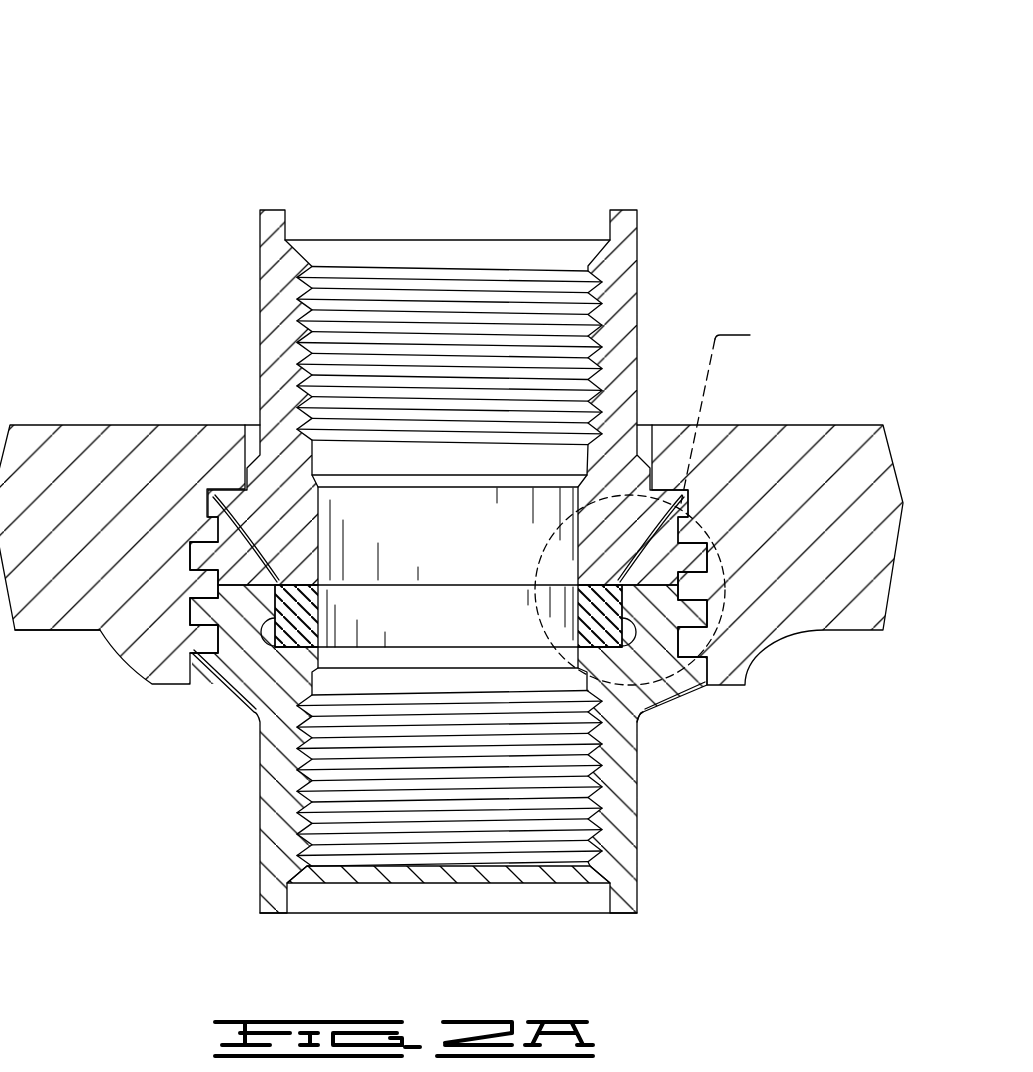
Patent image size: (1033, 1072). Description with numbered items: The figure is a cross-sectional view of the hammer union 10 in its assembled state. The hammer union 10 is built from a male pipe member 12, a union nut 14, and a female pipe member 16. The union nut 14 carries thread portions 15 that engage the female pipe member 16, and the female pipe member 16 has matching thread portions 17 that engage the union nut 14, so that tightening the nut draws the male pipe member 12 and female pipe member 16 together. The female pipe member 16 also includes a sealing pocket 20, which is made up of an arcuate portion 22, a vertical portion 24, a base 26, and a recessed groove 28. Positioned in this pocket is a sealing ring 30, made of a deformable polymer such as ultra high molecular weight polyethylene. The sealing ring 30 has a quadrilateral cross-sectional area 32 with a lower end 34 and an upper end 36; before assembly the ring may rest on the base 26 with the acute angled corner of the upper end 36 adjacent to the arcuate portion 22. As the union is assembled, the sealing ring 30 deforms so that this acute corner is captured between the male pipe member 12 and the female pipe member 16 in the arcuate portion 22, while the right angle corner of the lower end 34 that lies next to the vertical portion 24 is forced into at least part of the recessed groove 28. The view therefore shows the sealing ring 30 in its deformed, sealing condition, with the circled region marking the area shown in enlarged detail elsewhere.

The hammer union 10 is at (233, 87).
The male pipe member 12 is at (260, 292).
The union nut 14 is at (823, 425).
The thread portions 15 is at (203, 540).
The female pipe member 16 is at (640, 822).
The thread portions 17 is at (100, 632).
The sealing pocket 20 is at (487, 597).
The arcuate portion 22 is at (246, 489).
The vertical portion 24 is at (627, 585).
The base 26 is at (637, 727).
The recessed groove 28 is at (690, 682).
The sealing ring 30 is at (228, 693).
The cross-sectional area 32 is at (670, 693).
The lower end 34 is at (300, 643).
The upper end 36 is at (197, 607).